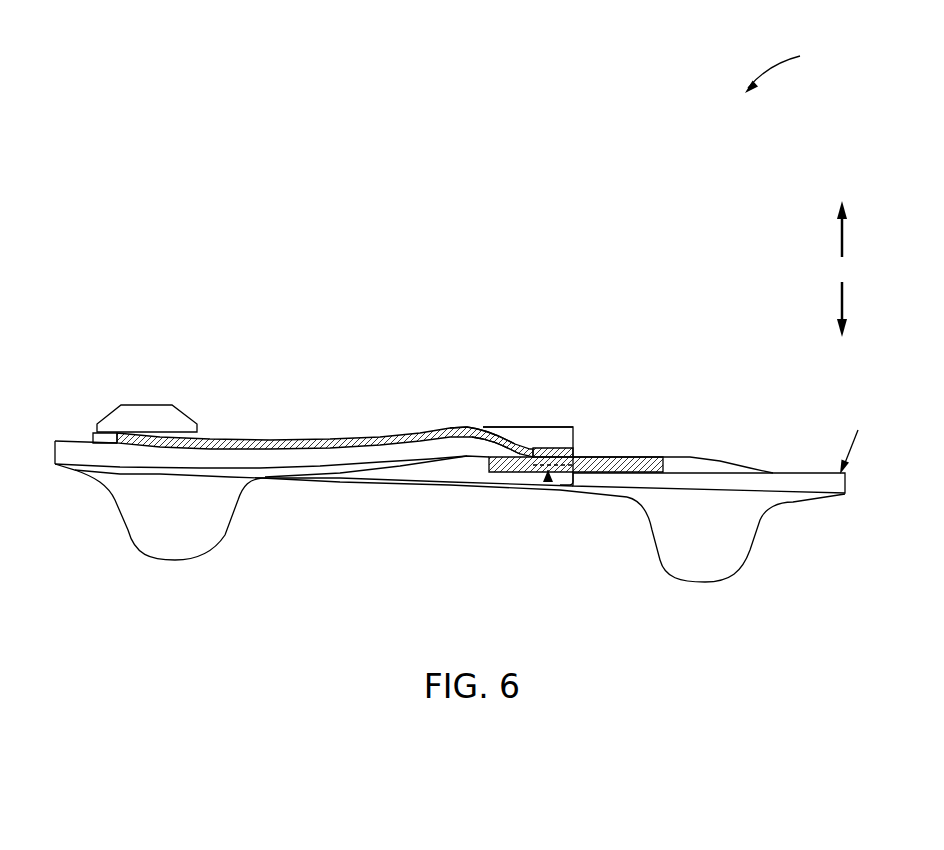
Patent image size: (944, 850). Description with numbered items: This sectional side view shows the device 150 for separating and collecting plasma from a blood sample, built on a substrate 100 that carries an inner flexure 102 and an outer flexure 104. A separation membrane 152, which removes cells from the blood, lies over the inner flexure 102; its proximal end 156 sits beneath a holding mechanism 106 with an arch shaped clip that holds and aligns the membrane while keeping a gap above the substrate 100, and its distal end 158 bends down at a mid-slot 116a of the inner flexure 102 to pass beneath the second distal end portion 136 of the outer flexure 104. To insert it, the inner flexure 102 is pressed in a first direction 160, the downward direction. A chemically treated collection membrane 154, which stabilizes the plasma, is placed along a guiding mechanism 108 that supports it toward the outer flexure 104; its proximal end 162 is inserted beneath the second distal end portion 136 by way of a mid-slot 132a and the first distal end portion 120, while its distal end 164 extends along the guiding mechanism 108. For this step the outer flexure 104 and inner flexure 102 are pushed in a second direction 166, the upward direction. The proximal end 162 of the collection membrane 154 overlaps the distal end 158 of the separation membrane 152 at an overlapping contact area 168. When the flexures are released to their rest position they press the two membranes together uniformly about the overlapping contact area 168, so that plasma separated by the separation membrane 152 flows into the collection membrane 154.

The substrate 100 is at (864, 443).
The inner flexure 102 is at (84, 452).
The outer flexure 104 is at (567, 435).
The holding mechanism 106 is at (147, 405).
The guiding mechanism 108 is at (737, 465).
The lower surface 116a is at (490, 442).
The first distal end portion 120 is at (455, 427).
The engagement surface 132a is at (578, 457).
The second distal end portion 136 is at (577, 445).
The device 150 is at (794, 63).
The separation membrane 152 is at (240, 434).
The collection membrane 154 is at (630, 457).
The proximal end 156 is at (140, 440).
The distal end 158 is at (484, 427).
The first direction 160 is at (840, 305).
The proximal end 162 is at (489, 464).
The distal end 164 is at (661, 473).
The second direction 166 is at (840, 237).
The overlapping contact area 168 is at (548, 482).